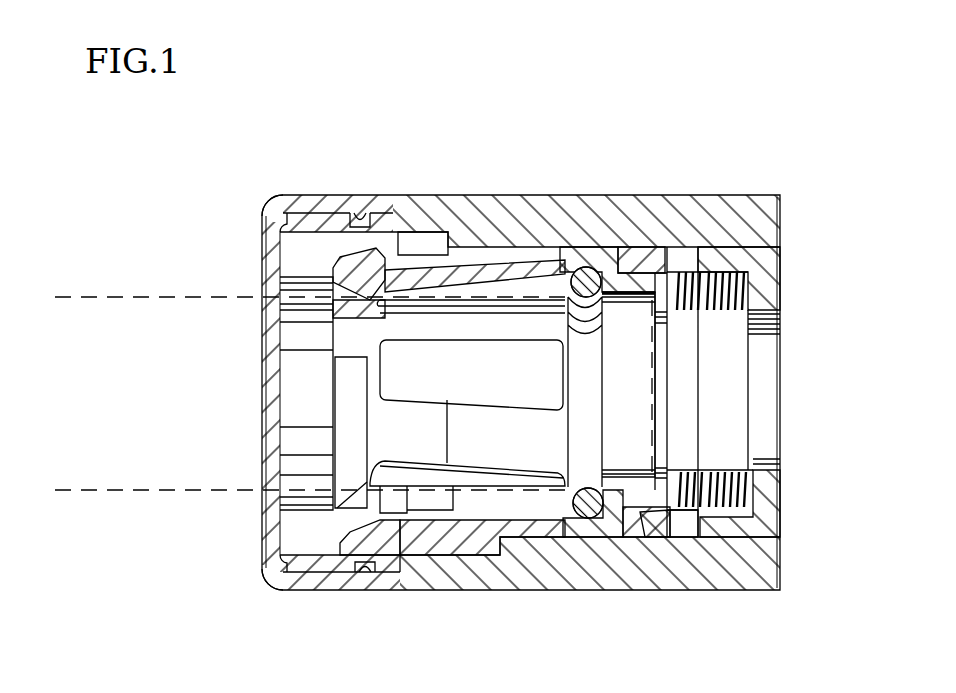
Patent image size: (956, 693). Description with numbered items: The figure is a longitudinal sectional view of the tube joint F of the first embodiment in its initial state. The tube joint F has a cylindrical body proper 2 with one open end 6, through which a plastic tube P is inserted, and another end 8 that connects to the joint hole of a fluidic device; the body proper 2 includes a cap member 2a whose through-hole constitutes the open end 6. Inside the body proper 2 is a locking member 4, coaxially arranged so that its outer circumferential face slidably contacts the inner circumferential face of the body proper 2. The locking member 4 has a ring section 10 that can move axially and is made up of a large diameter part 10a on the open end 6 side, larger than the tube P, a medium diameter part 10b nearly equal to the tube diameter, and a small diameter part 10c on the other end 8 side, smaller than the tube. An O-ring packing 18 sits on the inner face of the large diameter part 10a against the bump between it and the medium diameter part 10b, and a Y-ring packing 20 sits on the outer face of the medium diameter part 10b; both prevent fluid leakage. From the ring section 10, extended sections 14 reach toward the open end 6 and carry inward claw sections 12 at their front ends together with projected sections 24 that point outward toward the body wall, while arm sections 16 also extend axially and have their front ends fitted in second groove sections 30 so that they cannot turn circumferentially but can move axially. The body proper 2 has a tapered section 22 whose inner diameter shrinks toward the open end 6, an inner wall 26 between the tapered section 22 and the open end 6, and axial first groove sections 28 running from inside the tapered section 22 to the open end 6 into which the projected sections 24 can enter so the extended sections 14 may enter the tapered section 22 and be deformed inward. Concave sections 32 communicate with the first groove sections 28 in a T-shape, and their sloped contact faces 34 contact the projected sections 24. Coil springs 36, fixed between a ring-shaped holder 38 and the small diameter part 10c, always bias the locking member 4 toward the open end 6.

The body proper 2 is at (497, 200).
The cap member 2a is at (285, 198).
The locking member 4 is at (690, 418).
The open end 6 is at (262, 378).
The other end 8 is at (781, 366).
The ring section 10 is at (684, 147).
The large diameter part 10a is at (580, 262).
The medium diameter part 10b is at (638, 290).
The small diameter part 10c is at (665, 275).
The claw sections 12 is at (367, 418).
The extended sections 14 is at (462, 422).
The arm sections 16 is at (513, 530).
The O-ring packing 18 is at (590, 520).
The Y-ring packing 20 is at (633, 537).
The tapered section 22 is at (333, 527).
The projected sections 24 is at (363, 260).
The inner wall 26 is at (300, 500).
The first groove sections 28 is at (320, 200).
The second groove sections 30 is at (300, 339).
The concave sections 32 is at (425, 235).
The contact faces 34 is at (403, 232).
The coil springs 36 is at (715, 275).
The ring-shaped holder 38 is at (770, 285).
The tube P is at (160, 492).
The tube joint F is at (446, 108).